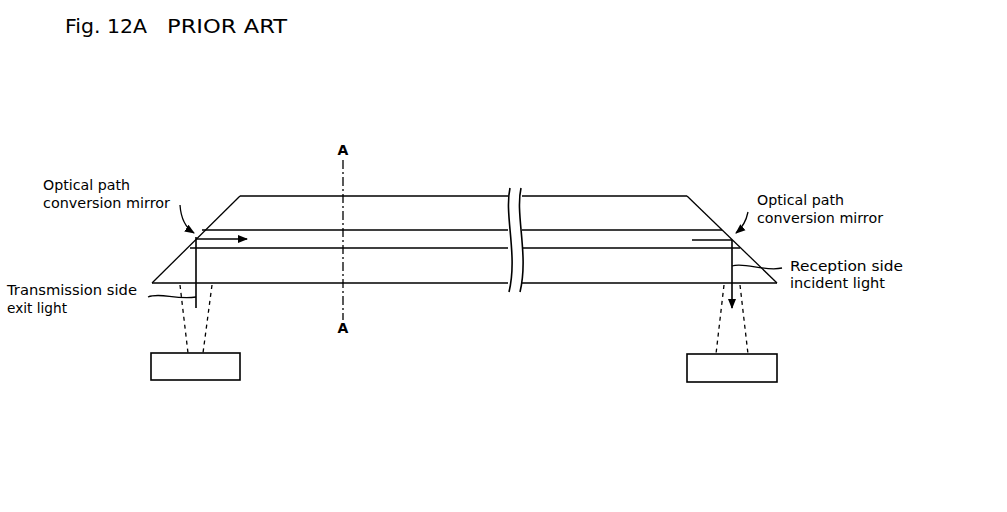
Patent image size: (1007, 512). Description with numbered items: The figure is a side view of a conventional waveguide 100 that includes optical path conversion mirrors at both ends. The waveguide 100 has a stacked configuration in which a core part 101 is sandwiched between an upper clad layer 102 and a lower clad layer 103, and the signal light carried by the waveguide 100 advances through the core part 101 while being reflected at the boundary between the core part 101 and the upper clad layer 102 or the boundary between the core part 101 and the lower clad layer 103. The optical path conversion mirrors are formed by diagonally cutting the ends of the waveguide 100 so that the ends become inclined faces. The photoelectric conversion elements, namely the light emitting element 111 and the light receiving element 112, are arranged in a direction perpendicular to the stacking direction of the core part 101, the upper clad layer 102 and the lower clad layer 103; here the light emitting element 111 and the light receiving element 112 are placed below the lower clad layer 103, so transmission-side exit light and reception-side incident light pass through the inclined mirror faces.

The waveguide 100 is at (437, 152).
The core part 101 is at (601, 238).
The upper clad layer 102 is at (555, 197).
The lower clad layer 103 is at (656, 255).
The light emitting element 111 is at (193, 380).
The light receiving element 112 is at (733, 382).